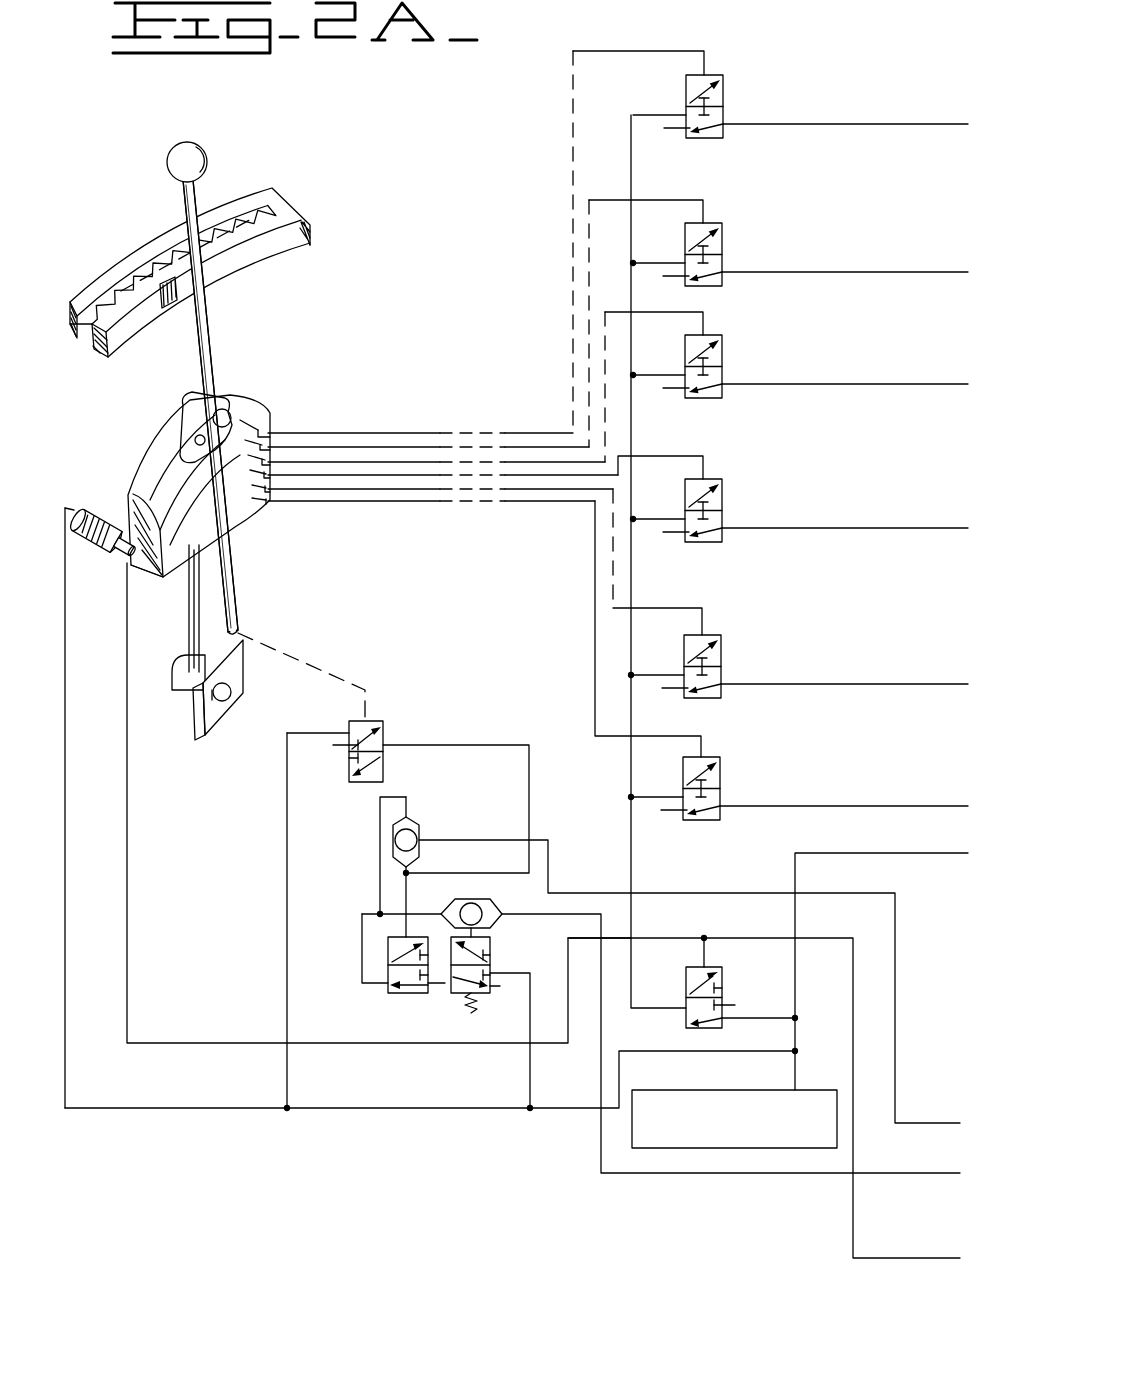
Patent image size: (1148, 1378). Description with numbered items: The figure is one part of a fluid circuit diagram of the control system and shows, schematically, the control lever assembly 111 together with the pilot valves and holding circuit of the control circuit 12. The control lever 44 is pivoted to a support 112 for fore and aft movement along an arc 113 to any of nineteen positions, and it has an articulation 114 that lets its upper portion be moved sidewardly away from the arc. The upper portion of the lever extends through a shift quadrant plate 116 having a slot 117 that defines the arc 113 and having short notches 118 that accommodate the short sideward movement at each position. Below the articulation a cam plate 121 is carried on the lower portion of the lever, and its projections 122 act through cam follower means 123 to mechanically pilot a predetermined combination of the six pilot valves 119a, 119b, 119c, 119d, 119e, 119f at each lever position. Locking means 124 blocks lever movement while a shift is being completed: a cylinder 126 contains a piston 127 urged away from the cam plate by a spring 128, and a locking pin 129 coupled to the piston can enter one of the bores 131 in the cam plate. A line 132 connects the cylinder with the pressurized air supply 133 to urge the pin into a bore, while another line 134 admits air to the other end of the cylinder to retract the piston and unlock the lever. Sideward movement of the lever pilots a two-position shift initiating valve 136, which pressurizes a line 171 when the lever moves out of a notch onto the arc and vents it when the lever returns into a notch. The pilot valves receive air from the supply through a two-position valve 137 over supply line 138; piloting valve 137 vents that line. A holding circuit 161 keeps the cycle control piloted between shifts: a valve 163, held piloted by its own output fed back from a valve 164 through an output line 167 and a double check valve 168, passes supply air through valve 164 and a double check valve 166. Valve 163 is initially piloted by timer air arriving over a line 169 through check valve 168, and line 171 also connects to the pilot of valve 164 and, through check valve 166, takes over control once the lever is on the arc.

The control circuit 12 is at (796, 55).
The control lever 44 is at (184, 205).
The control lever assembly 111 is at (338, 326).
The support 112 is at (218, 708).
The arc 113 is at (55, 342).
The articulation 114 is at (226, 420).
The shift quadrant plate 116 is at (298, 222).
The slot 117 is at (233, 235).
The notches 118 is at (228, 237).
The pilot valve 119a is at (722, 228).
The pilot valve 119b is at (722, 506).
The pilot valve 119c is at (720, 778).
The pilot valve 119d is at (720, 84).
The pilot valve 119e is at (722, 362).
The pilot valve 119f is at (721, 653).
The cam plate 121 is at (262, 408).
The projections 122 is at (190, 432).
The cam follower means 123 is at (258, 500).
The locking means 124 is at (68, 505).
The cylinder 126 is at (108, 520).
The piston 127 is at (93, 516).
The spring 128 is at (98, 536).
The locking pin 129 is at (130, 560).
The bores 131 is at (148, 565).
The line 132 is at (65, 643).
The pressurized air supply 133 is at (730, 1088).
The line 134 is at (128, 820).
The shift initiating valve 136 is at (385, 728).
The two-position valve 137 is at (722, 985).
The supply line 138 is at (631, 775).
The holding circuit 161 is at (460, 815).
The valve 163 is at (445, 985).
The valve 164 is at (400, 995).
The double check valve 166 is at (420, 849).
The output line 167 is at (380, 882).
The double check valve 168 is at (455, 905).
The line 169 is at (600, 1145).
The line 171 is at (452, 745).